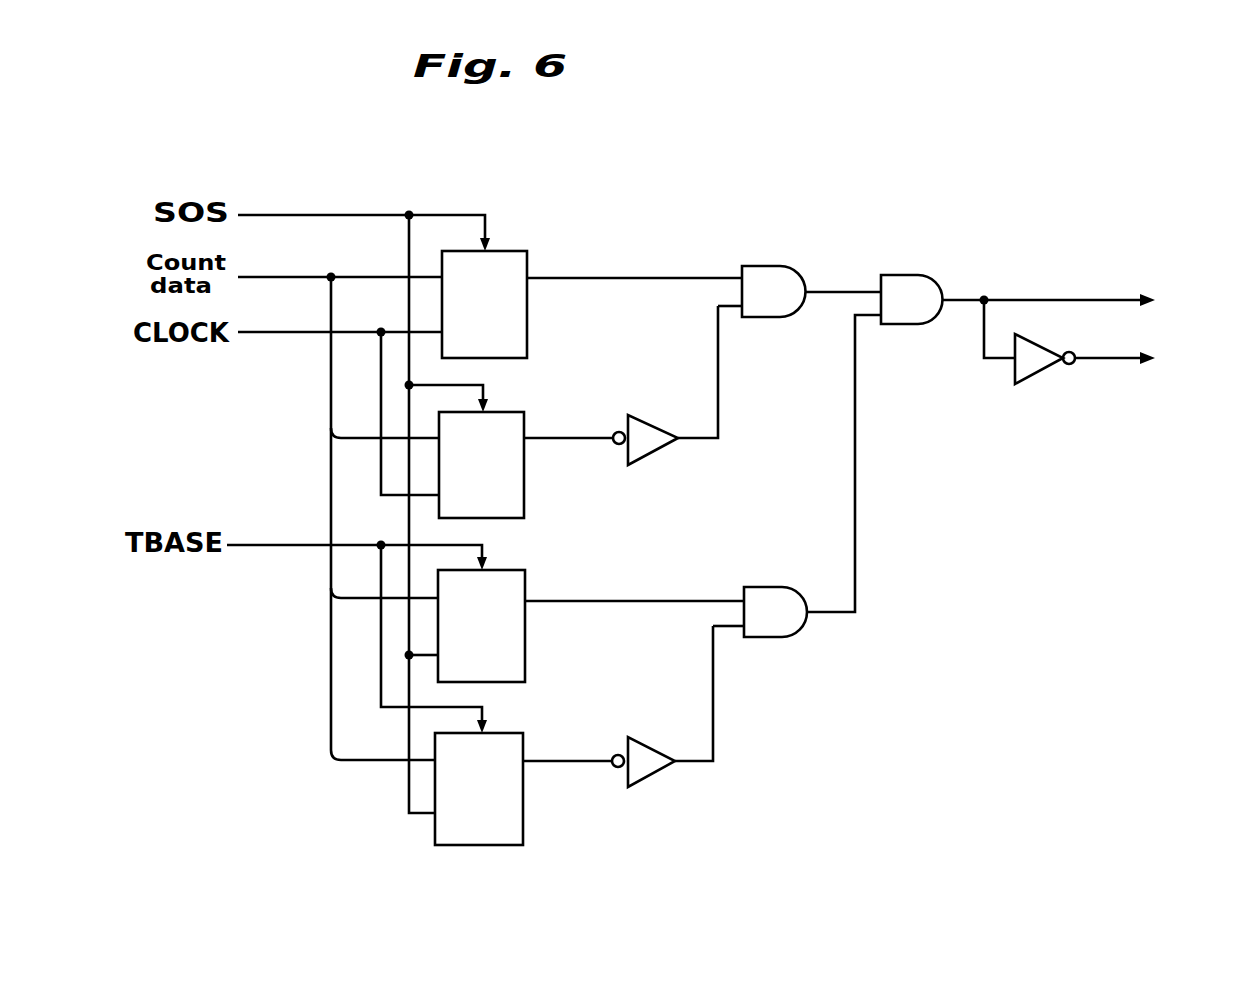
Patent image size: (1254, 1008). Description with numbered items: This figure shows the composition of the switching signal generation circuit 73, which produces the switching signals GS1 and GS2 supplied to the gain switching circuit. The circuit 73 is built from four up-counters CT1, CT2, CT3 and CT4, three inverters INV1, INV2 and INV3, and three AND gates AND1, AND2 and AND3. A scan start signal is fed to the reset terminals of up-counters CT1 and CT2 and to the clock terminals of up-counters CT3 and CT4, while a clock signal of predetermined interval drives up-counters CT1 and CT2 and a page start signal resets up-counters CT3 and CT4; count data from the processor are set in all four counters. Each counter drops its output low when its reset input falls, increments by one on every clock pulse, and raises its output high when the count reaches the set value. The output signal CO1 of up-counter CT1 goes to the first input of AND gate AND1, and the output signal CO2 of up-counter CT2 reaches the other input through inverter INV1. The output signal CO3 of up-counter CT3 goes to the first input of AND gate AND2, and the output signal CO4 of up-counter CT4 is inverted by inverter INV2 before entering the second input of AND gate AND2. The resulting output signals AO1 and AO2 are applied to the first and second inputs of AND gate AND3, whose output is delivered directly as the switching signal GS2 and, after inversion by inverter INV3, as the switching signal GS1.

The switching signal generation circuit 73 is at (731, 190).
The up-counter CT1 is at (523, 250).
The up-counter CT2 is at (522, 412).
The up-counter CT3 is at (522, 570).
The up-counter CT4 is at (522, 733).
The output signal CO1 is at (608, 281).
The output signal CO2 is at (578, 440).
The output signal CO3 is at (597, 603).
The output signal CO4 is at (578, 763).
The AND gate AND1 is at (778, 266).
The AND gate AND2 is at (787, 637).
The AND gate AND3 is at (918, 325).
The inverter INV1 is at (660, 452).
The inverter INV2 is at (655, 773).
The inverter INV3 is at (1037, 375).
The output signal AO1 is at (852, 291).
The output signal AO2 is at (848, 613).
The switching signal GS1 is at (1155, 360).
The switching signal GS2 is at (1091, 302).